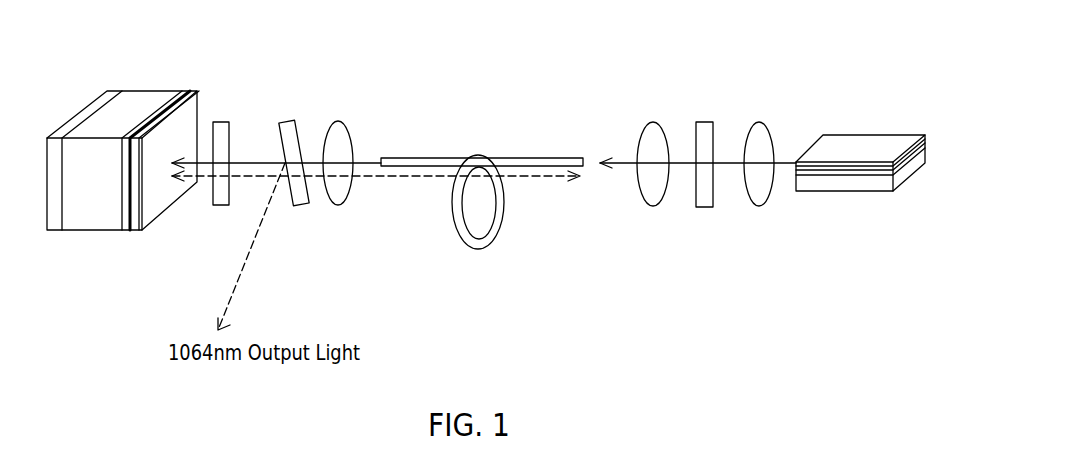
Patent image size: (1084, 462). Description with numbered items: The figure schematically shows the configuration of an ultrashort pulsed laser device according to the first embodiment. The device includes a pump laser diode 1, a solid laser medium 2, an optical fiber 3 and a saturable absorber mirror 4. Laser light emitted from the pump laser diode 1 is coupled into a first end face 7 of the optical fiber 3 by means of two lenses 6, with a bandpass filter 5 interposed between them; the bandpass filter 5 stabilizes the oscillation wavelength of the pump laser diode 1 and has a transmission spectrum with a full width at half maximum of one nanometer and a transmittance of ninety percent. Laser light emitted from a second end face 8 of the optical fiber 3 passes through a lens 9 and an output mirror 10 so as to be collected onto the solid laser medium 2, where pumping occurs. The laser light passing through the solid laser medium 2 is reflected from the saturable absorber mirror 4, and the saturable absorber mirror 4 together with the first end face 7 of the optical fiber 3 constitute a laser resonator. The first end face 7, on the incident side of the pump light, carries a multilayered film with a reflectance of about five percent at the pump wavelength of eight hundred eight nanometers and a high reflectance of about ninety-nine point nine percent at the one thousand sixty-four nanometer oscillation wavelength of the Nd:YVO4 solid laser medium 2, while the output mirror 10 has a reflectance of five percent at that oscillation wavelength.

The pump laser diode 1 is at (868, 135).
The solid laser medium 2 is at (221, 122).
The optical fiber 3 is at (458, 220).
The saturable absorber mirror 4 is at (143, 91).
The bandpass filter 5 is at (705, 122).
The lenses 6 is at (652, 122).
The first end face 7 is at (590, 155).
The second end face 8 is at (380, 158).
The lens 9 is at (338, 121).
The output mirror 10 is at (291, 121).